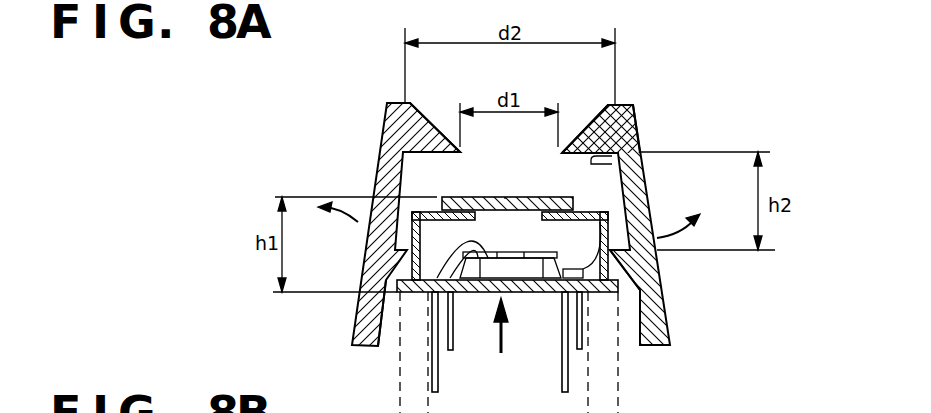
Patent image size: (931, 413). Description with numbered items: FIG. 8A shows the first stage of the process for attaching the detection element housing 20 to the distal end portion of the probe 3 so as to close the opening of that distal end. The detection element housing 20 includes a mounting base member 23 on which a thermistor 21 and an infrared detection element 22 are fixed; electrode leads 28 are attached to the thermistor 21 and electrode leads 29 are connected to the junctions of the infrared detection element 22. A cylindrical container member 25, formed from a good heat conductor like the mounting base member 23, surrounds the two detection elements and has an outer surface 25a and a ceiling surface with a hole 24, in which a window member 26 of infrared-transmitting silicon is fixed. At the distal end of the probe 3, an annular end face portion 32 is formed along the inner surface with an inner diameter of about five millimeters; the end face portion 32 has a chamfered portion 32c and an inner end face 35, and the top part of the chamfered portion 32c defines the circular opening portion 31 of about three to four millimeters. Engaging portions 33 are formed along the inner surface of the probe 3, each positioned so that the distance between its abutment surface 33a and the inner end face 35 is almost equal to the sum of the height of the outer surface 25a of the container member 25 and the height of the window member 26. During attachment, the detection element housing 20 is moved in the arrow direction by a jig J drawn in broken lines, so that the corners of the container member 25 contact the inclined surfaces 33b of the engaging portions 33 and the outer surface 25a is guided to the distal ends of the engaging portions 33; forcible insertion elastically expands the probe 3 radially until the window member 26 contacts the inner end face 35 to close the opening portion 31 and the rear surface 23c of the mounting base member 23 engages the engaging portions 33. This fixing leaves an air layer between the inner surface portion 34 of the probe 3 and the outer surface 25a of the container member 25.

The probe 3 is at (509, 202).
The detection element housing 20 is at (549, 220).
The thermistor 21 is at (595, 208).
The infrared detection element 22 is at (522, 292).
The mounting base member 23 is at (487, 292).
The rear surface 23c is at (643, 293).
The hole 24 is at (512, 218).
The container member 25 is at (445, 212).
The outer surface 25a is at (640, 228).
The window member 26 is at (505, 200).
The electrode leads 28 is at (578, 348).
The electrode leads 29 is at (473, 391).
The opening portion 31 is at (570, 243).
The end face portion 32 is at (580, 148).
The chamfered portion 32c is at (445, 135).
The engaging portions 33 is at (393, 253).
The abutment surface 33a is at (397, 243).
The inclined surfaces 33b is at (390, 290).
The inner surface portion 34 is at (388, 167).
The inner end face 35 is at (612, 162).
The jig J is at (407, 387).